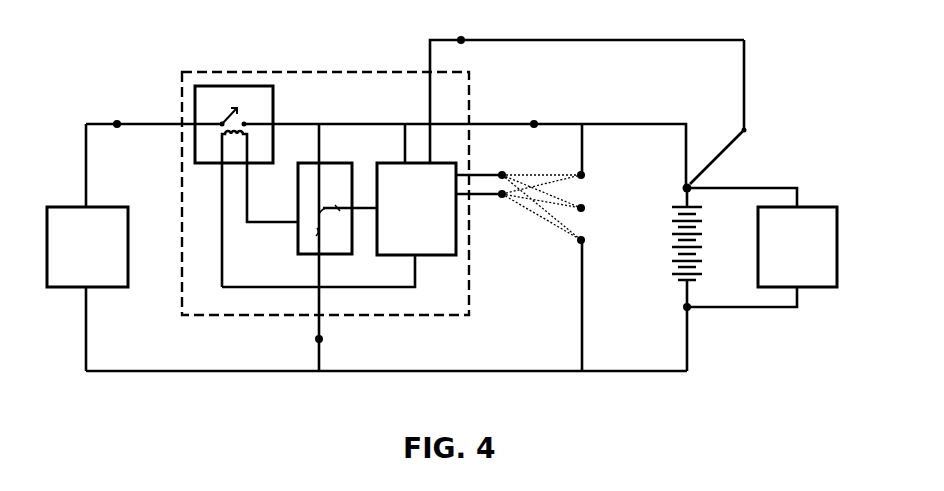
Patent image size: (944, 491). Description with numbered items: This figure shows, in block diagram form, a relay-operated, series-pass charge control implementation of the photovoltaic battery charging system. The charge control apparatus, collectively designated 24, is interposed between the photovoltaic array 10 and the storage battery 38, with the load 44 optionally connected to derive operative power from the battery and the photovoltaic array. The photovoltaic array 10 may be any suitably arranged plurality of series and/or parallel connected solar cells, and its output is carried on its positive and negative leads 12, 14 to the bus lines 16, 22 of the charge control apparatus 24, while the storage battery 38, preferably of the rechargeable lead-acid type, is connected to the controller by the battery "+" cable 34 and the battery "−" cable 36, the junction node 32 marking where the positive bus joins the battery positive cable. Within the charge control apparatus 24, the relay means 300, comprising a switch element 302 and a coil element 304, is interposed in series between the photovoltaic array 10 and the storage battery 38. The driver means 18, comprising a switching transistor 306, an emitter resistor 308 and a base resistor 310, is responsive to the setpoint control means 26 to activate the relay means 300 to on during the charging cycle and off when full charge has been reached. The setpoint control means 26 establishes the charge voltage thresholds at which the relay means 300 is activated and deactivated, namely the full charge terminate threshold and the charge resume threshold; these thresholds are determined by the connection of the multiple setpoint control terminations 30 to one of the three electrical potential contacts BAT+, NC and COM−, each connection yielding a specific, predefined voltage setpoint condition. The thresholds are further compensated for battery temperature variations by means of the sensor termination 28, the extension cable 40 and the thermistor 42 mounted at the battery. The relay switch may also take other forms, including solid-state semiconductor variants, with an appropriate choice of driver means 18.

The photovoltaic array 10 is at (45, 202).
The positive PV lead 12 is at (82, 164).
The negative PV lead 14 is at (82, 343).
The positive bus line 16 is at (116, 120).
The driver means 18 is at (297, 255).
The negative connection line 22 is at (313, 342).
The charge control apparatus 24 is at (340, 70).
The setpoint control means 26 is at (373, 255).
The battery temperature measurement termination 28 is at (460, 36).
The voltage setpoint control terminations 30 is at (507, 170).
The junction node 32 is at (538, 120).
The battery "+" cable 34 is at (622, 123).
The battery "−" cable 36 is at (625, 373).
The storage battery 38 is at (670, 275).
The extension cable 40 is at (668, 37).
The temperature sensor means 42 is at (700, 180).
The load 44 is at (837, 289).
The relay means 300 is at (283, 108).
The switch element 302 is at (232, 107).
The coil element 304 is at (224, 136).
The switching transistor 306 is at (322, 207).
The emitter resistor 308 is at (316, 232).
The base resistor 310 is at (338, 206).